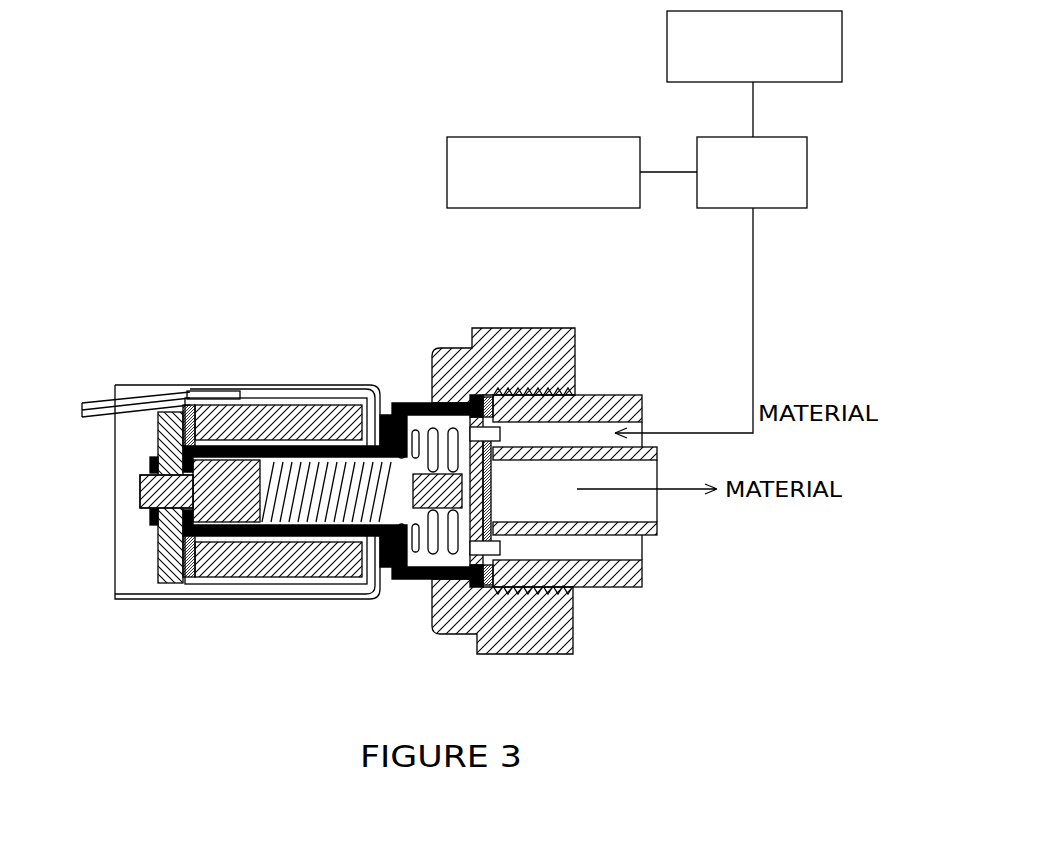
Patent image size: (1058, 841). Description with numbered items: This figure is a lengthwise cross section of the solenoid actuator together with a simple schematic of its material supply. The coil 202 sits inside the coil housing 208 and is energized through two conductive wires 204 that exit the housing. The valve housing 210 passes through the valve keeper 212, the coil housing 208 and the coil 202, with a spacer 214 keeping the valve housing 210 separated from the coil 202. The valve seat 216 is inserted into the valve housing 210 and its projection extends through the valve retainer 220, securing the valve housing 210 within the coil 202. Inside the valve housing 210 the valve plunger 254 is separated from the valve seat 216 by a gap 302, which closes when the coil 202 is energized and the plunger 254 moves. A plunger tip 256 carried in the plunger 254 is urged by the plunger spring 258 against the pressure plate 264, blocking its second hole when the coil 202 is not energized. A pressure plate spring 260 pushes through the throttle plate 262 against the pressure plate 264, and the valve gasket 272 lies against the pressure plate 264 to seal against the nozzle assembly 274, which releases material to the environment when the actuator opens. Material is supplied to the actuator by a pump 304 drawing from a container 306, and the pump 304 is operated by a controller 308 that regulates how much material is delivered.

The coil 202 is at (207, 573).
The conductive wires 204 is at (90, 405).
The coil housing 208 is at (287, 388).
The valve housing 210 is at (320, 530).
The valve keeper 212 is at (535, 352).
The spacer 214 is at (372, 405).
The valve seat 216 is at (238, 485).
The valve retainer 220 is at (166, 426).
The valve plunger 254 is at (352, 467).
The plunger tip 256 is at (432, 492).
The plunger spring 258 is at (374, 580).
The pressure plate spring 260 is at (432, 548).
The throttle plate 262 is at (458, 553).
The pressure plate 264 is at (474, 445).
The valve gasket 272 is at (480, 565).
The nozzle assembly 274 is at (588, 570).
The gap 302 is at (263, 515).
The pump 304 is at (808, 172).
The container 306 is at (845, 44).
The controller 308 is at (447, 170).